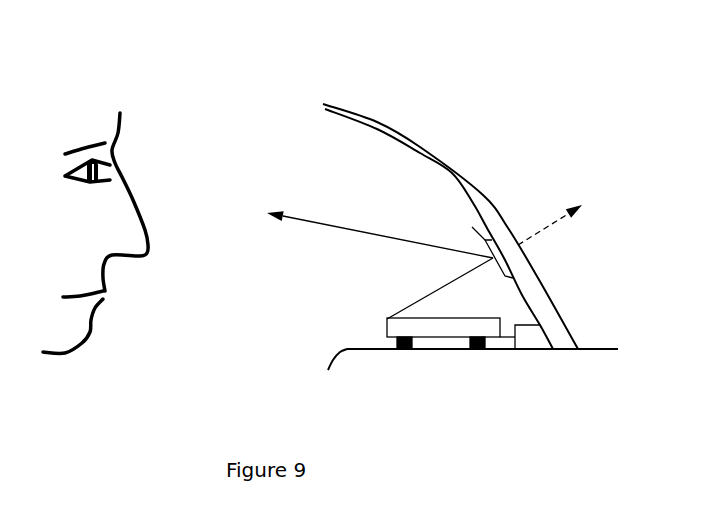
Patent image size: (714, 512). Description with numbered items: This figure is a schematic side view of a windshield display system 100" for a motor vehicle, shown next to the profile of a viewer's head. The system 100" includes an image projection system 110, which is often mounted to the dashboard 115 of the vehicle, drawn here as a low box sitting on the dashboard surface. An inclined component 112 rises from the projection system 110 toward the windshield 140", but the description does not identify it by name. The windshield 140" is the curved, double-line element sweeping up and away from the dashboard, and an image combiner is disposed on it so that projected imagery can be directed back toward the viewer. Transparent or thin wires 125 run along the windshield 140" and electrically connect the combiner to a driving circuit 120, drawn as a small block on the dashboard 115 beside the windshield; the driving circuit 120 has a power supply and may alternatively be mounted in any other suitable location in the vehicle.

The windshield display system 100 is at (291, 118).
The windshield 140 is at (325, 105).
The transparent wires 125 is at (535, 307).
The mirror / light guide 112 is at (447, 285).
The image projection system 110 is at (426, 328).
The driving circuit 120 is at (537, 340).
The dashboard 115 is at (387, 360).